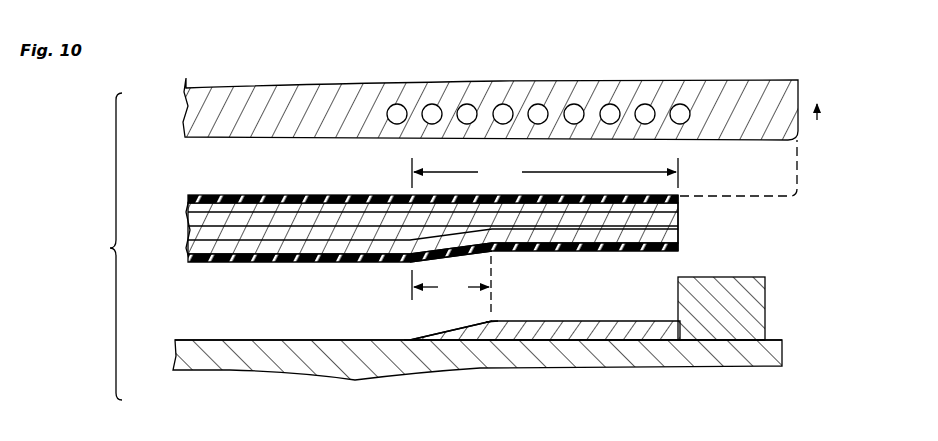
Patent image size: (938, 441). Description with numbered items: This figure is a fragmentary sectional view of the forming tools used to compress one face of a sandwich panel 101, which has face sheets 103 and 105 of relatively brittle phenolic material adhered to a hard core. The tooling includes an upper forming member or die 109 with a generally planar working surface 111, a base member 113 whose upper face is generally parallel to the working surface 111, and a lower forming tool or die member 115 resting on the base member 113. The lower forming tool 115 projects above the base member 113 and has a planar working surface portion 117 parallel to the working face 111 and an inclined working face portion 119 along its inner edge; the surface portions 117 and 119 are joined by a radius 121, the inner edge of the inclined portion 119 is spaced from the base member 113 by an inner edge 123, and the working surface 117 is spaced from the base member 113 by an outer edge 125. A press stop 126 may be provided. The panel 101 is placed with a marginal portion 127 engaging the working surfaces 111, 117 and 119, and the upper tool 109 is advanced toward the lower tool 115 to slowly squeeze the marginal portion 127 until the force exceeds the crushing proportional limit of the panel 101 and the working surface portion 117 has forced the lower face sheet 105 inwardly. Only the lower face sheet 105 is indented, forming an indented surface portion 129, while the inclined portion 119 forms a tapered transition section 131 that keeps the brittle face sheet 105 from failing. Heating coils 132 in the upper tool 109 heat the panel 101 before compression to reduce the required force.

The sandwich panel 101 is at (439, 229).
The face sheet 103 is at (262, 170).
The face sheet 105 is at (264, 262).
The upper forming member or die 109 is at (737, 80).
The working surface 111 is at (679, 197).
The base member 113 is at (707, 360).
The lower forming tool or die member 115 is at (642, 342).
The planar working surface portion 117 is at (595, 320).
The inclined working face portion 119 is at (452, 328).
The radius 121 is at (492, 320).
The inner edge 123 is at (410, 338).
The outer edge 125 is at (683, 331).
The press stop 126 is at (752, 303).
The marginal portion 127 is at (545, 173).
The indented surface portion 129 is at (635, 253).
The tapered transition section 131 is at (451, 284).
The heating coils 132 is at (535, 108).